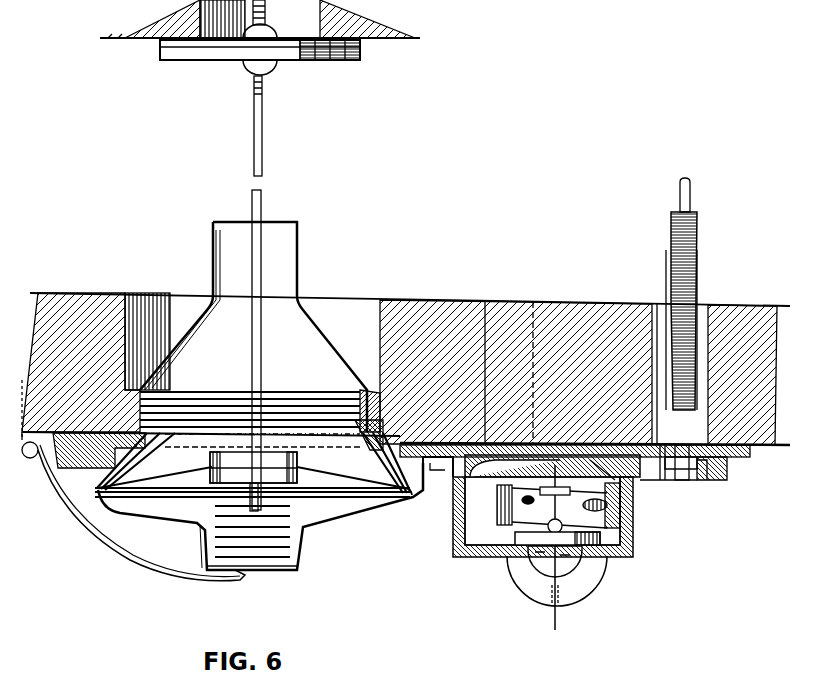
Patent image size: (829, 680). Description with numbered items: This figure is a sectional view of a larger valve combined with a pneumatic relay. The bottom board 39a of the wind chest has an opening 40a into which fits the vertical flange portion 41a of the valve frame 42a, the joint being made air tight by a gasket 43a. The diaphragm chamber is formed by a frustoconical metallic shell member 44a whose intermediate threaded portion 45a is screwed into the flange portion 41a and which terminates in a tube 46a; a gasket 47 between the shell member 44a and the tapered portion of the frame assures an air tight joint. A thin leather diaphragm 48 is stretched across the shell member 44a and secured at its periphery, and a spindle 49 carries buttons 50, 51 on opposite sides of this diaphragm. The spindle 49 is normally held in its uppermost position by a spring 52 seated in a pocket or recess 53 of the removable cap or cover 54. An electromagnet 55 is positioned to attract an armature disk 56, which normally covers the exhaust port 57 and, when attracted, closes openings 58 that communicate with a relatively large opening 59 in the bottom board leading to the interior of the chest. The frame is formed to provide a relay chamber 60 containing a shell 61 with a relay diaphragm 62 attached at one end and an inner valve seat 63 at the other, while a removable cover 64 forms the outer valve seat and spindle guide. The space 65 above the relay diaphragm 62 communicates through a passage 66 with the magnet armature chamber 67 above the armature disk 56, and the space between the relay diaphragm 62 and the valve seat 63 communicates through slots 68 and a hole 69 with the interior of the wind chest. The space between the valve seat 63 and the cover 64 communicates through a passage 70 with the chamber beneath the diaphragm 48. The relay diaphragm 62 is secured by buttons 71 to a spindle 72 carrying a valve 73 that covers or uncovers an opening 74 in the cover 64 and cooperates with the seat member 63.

The bottom board 39a is at (440, 300).
The opening 40a is at (343, 320).
The vertical flange portion 41a is at (376, 392).
The valve frame 42a is at (728, 472).
The gasket 43a is at (752, 452).
The shell member 44a is at (380, 455).
The intermediate threaded portion 45a is at (345, 392).
The tube 46a is at (299, 258).
The gasket 47 is at (92, 472).
The diaphragm 48 is at (356, 480).
The spindle 49 is at (262, 373).
The button 50 is at (253, 467).
The button 51 is at (253, 477).
The spring 52 is at (292, 547).
The pocket or recess 53 is at (297, 566).
The removable cap or cover 54 is at (372, 514).
The electromagnet 55 is at (697, 258).
The armature disk 56 is at (684, 470).
The exhaust port 57 is at (677, 482).
The openings 58 is at (662, 482).
The opening 59 is at (708, 318).
The relay chamber 60 is at (455, 520).
The shell 61 is at (484, 497).
The relay diaphragm 62 is at (512, 490).
The inner valve seat 63 is at (595, 511).
The removable cover 64 is at (515, 556).
The space 65 is at (555, 487).
The passage 66 is at (591, 474).
The magnet armature chamber 67 is at (705, 482).
The slots 68 is at (537, 507).
The hole 69 is at (506, 302).
The passage 70 is at (440, 472).
The buttons 71 is at (566, 517).
The spindle 72 is at (558, 620).
The valve 73 is at (557, 554).
The opening 74 is at (535, 560).